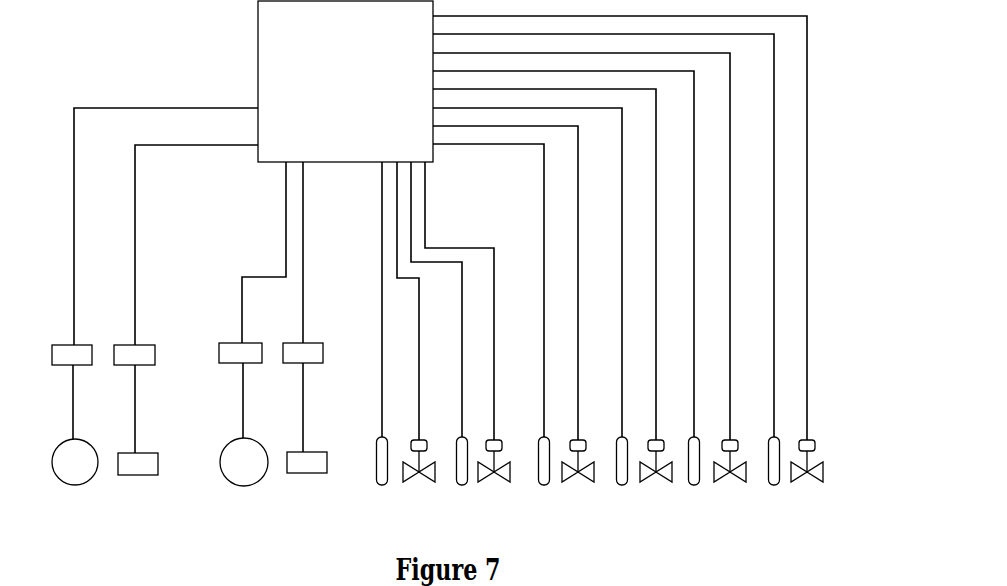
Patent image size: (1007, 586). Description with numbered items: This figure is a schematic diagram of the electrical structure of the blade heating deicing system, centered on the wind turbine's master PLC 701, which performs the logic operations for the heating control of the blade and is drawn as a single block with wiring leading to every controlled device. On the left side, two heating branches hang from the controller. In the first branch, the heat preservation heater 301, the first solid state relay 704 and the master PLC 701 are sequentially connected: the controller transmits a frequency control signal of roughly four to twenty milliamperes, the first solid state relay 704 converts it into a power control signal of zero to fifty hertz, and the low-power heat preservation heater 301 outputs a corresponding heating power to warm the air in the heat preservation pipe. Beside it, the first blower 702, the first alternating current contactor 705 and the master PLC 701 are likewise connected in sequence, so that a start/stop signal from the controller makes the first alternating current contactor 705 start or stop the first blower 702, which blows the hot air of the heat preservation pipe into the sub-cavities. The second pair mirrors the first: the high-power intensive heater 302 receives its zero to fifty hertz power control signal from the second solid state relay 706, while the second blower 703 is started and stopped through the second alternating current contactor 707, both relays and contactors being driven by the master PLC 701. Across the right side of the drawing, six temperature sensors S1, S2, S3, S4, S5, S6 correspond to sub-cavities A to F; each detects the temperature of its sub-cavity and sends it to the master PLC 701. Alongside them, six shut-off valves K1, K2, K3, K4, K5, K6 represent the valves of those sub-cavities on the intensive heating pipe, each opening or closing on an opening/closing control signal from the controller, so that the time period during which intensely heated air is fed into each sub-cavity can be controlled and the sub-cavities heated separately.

The master programmable logic controller 701 is at (258, 33).
The first blower 702 is at (82, 478).
The second blower 703 is at (248, 473).
The first solid state relay 704 is at (147, 359).
The first alternating current contactor 705 is at (82, 355).
The second solid state relay 706 is at (312, 355).
The second alternating current contactor 707 is at (250, 355).
The heat preservation heater 301 is at (142, 472).
The intensive heater 302 is at (308, 472).
The temperature sensor S1 is at (385, 475).
The temperature sensor S2 is at (465, 475).
The temperature sensor S3 is at (547, 475).
The temperature sensor S4 is at (625, 475).
The temperature sensor S5 is at (697, 475).
The temperature sensor S6 is at (777, 475).
The shut-off valve K1 is at (428, 477).
The shut-off valve K2 is at (503, 477).
The shut-off valve K3 is at (587, 477).
The shut-off valve K4 is at (665, 477).
The shut-off valve K5 is at (739, 477).
The shut-off valve K6 is at (816, 477).